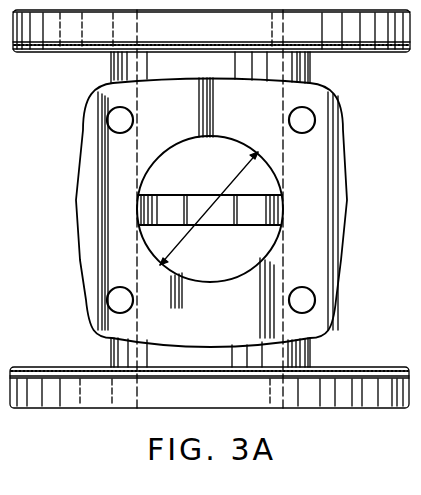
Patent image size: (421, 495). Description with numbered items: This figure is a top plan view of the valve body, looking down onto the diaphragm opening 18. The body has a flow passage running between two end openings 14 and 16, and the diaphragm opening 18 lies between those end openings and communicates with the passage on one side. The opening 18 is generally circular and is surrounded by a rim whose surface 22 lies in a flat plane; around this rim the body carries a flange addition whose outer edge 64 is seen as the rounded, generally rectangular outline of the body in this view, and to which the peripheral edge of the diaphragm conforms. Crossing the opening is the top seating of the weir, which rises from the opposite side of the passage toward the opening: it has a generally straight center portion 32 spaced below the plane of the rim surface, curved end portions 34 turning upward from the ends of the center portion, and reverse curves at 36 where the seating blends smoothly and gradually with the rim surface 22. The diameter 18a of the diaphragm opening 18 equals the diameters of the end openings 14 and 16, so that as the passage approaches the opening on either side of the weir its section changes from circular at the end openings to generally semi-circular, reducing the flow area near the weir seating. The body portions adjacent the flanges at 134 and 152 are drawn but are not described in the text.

The end opening 14 is at (260, 12).
The end opening 16 is at (153, 408).
The neck portion 134 is at (314, 81).
The lower neck portion 152 is at (144, 348).
The rim surface 22 is at (92, 260).
The edge of body opening flange 64 is at (80, 170).
The diaphragm opening 18 is at (214, 138).
The diameter of diaphragm opening 18a is at (233, 263).
The center portion of weir seating 32 is at (207, 192).
The curved end portions of weir seating 34 is at (163, 202).
The reverse curve of weir seating 36 is at (137, 207).